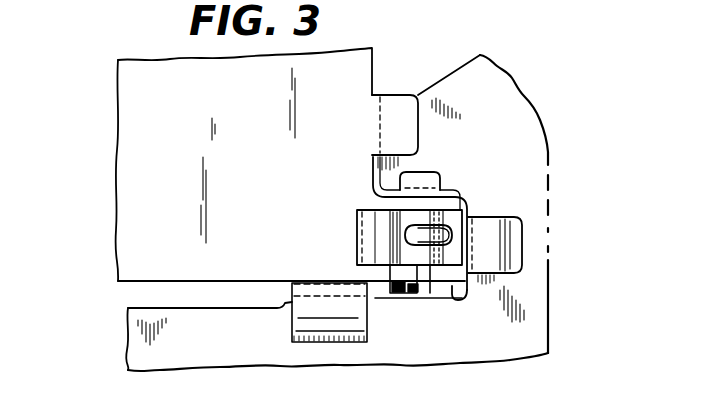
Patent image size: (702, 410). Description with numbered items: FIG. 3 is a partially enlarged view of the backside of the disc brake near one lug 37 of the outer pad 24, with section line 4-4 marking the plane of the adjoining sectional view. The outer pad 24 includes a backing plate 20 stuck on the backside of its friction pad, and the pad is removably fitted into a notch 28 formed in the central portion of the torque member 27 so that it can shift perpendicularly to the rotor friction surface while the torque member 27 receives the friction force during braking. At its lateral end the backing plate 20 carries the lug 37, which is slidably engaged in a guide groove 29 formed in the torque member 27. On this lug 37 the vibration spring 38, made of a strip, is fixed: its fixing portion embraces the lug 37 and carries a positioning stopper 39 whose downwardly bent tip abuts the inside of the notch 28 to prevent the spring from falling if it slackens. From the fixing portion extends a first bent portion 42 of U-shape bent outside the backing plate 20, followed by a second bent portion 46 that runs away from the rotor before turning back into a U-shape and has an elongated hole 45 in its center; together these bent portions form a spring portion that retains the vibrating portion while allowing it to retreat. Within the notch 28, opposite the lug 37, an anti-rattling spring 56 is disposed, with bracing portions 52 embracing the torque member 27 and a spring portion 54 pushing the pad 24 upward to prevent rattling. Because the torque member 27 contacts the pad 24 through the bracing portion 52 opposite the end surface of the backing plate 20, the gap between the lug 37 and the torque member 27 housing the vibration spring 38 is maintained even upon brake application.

The section line 4- 4 is at (64, 225).
The backing plate 20 is at (196, 140).
The outer pad 24 is at (100, 201).
The torque member 27 is at (537, 333).
The notch 28 is at (235, 306).
The guide groove 29 is at (463, 300).
The lug 37 is at (437, 277).
The vibration spring 38 is at (352, 232).
The positioning stopper 39 is at (406, 278).
The first bent portion 42 is at (380, 253).
The elongated hole 45 is at (404, 238).
The second bent portion 46 is at (430, 268).
The bracing portion 52 is at (397, 100).
The spring portion 54 is at (318, 345).
The anti-rattling spring 56 is at (488, 292).